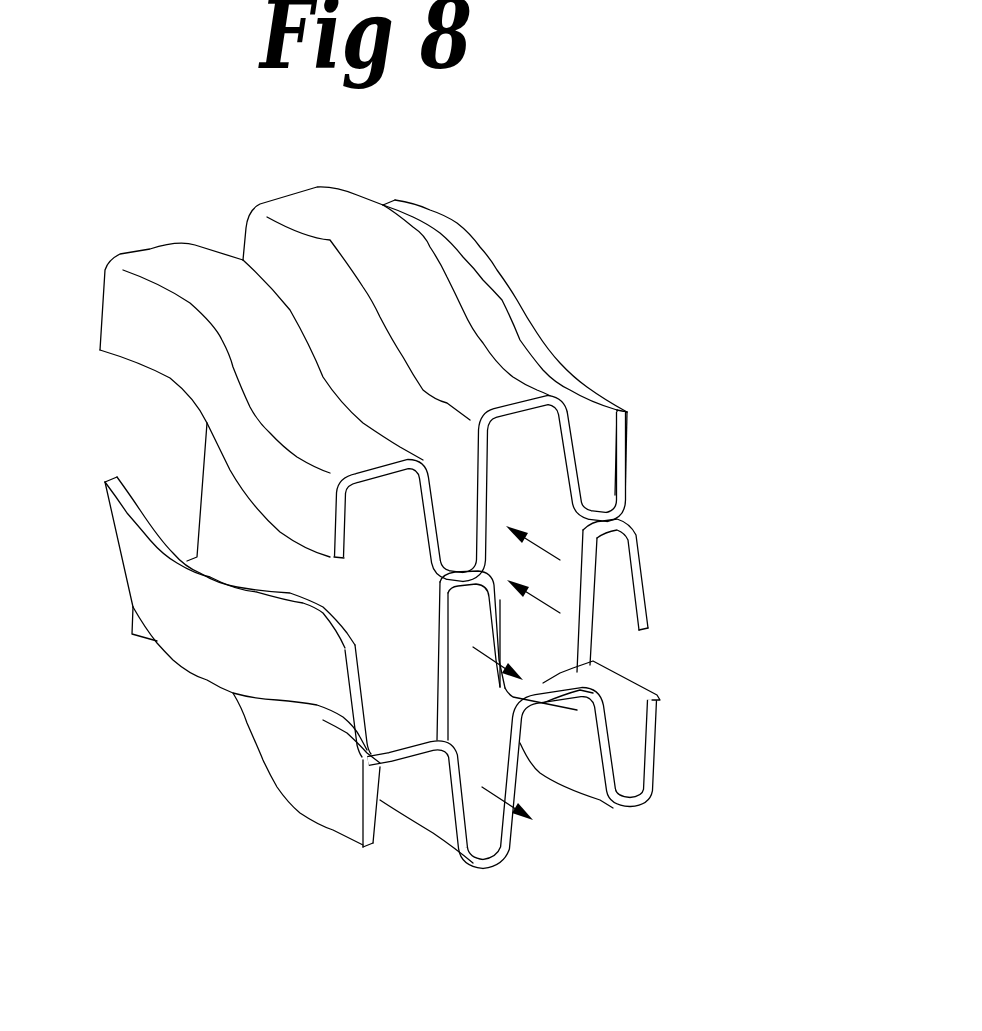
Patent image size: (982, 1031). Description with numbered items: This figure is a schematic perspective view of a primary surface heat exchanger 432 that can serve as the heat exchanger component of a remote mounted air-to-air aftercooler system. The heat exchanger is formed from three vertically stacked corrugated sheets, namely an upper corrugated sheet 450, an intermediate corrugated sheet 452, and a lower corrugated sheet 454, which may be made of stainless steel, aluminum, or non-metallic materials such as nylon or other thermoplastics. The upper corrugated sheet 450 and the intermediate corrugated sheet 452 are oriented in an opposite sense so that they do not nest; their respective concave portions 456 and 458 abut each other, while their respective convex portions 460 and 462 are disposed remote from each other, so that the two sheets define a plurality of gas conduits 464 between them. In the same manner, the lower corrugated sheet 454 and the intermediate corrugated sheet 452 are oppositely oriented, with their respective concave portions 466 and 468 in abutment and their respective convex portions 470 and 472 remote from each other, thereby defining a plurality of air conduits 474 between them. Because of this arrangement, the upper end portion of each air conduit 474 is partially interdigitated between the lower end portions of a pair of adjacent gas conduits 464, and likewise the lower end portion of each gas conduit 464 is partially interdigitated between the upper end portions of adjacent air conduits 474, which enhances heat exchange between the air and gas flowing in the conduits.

The primary surface heat exchanger 432 is at (606, 316).
The upper corrugated sheet 450 is at (418, 317).
The intermediate corrugated sheet 452 is at (587, 622).
The lower corrugated sheet 454 is at (630, 807).
The concave portion of upper sheet 456 is at (626, 463).
The concave portion of intermediate sheet 458 is at (634, 541).
The convex portion of upper sheet 460 is at (520, 428).
The convex portion of intermediate sheet 462 is at (550, 700).
The gas conduits 464 is at (523, 497).
The concave portion of lower sheet 466 is at (450, 773).
The concave portion of intermediate sheet 468 is at (367, 760).
The convex portion of lower sheet 470 is at (500, 860).
The convex portion of intermediate sheet 472 is at (440, 610).
The air conduits 474 is at (471, 758).